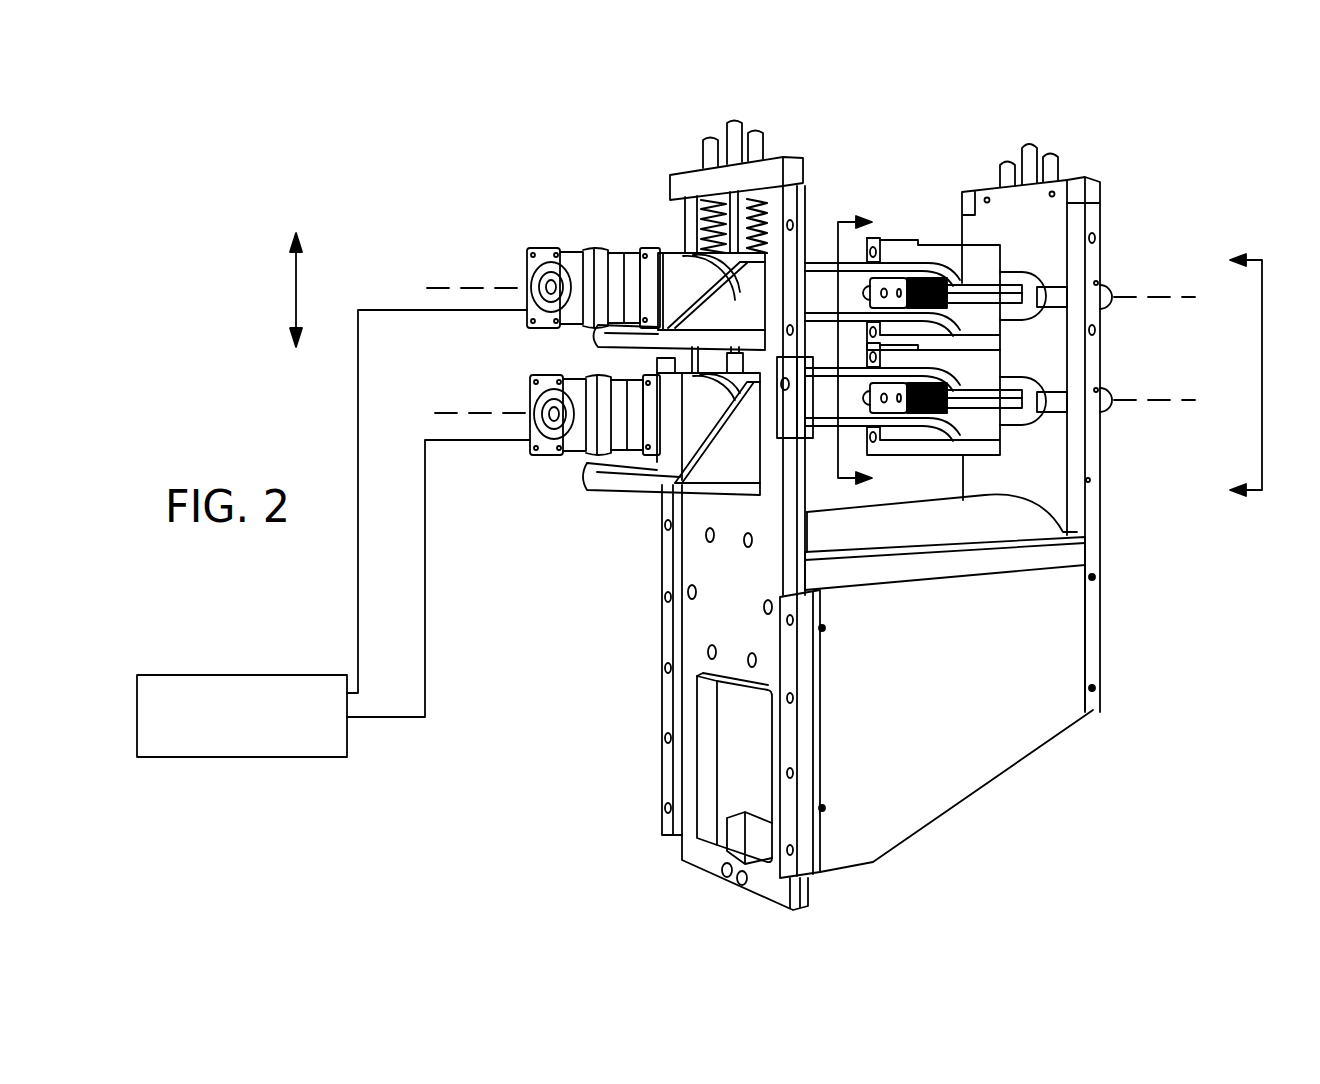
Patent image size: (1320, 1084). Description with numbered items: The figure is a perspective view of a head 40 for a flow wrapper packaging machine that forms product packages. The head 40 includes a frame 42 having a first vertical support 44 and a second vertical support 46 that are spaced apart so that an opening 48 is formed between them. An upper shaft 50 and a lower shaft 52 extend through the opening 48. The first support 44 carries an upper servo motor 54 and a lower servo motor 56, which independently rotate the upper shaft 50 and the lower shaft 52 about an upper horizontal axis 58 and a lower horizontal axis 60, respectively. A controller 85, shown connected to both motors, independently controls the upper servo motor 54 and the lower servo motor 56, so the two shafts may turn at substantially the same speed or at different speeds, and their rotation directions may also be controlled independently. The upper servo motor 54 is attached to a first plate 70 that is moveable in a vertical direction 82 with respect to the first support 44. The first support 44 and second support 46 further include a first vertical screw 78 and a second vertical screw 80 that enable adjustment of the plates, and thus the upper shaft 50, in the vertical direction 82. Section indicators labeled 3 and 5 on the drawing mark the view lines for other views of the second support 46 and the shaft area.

The head 40 is at (310, 158).
The frame 42 is at (1043, 717).
The first vertical support 44 is at (687, 858).
The second vertical support 46 is at (1092, 463).
The opening 48 is at (815, 495).
The upper shaft 50 is at (812, 285).
The lower shaft 52 is at (826, 413).
The upper servo motor 54 is at (553, 250).
The lower servo motor 56 is at (560, 457).
The upper horizontal axis 58 is at (438, 285).
The lower horizontal axis 60 is at (445, 412).
The first plate 70 is at (684, 245).
The first vertical screw 78 is at (713, 197).
The second vertical screw 80 is at (1038, 141).
The vertical direction 82 is at (296, 293).
The controller 85 is at (274, 757).
The section line 3- 3 is at (1234, 378).
The section line 5- 5 is at (870, 351).